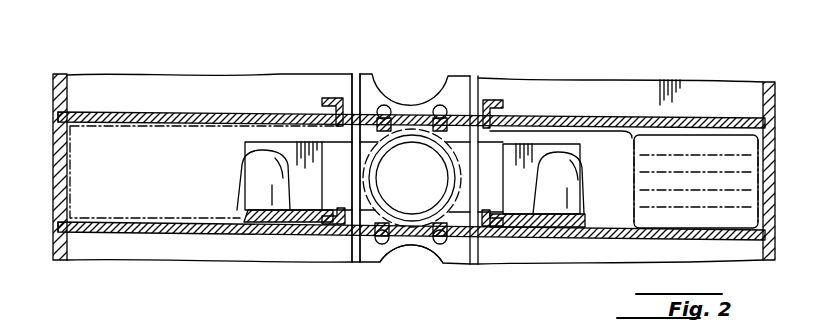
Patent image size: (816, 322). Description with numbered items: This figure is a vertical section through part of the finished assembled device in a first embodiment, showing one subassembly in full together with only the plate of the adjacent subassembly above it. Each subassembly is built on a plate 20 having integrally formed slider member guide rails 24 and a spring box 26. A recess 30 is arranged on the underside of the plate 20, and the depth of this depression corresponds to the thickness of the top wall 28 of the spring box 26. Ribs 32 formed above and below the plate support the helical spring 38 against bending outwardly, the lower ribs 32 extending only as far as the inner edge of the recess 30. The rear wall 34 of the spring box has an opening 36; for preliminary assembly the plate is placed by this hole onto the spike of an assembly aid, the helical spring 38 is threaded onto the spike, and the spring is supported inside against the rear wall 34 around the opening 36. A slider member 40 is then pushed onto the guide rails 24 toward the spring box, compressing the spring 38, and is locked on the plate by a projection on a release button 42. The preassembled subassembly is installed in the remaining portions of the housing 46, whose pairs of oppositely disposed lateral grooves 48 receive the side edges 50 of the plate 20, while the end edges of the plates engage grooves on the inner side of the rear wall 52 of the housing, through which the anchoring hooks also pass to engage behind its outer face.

The plate 20 is at (137, 118).
The slider member guide rails 24 is at (333, 98).
The spring box 26 is at (474, 76).
The top wall 28 is at (363, 102).
The recess 30 is at (356, 168).
The ribs 32 is at (440, 106).
The rear wall 34 is at (456, 230).
The opening 36 is at (413, 213).
The helical spring 38 is at (428, 220).
The slider member 40 is at (543, 150).
The release button 42 is at (700, 140).
The housing 46 is at (60, 75).
The lateral grooves 48 is at (758, 116).
The side edges 50 is at (58, 118).
The rear wall 52 is at (200, 86).